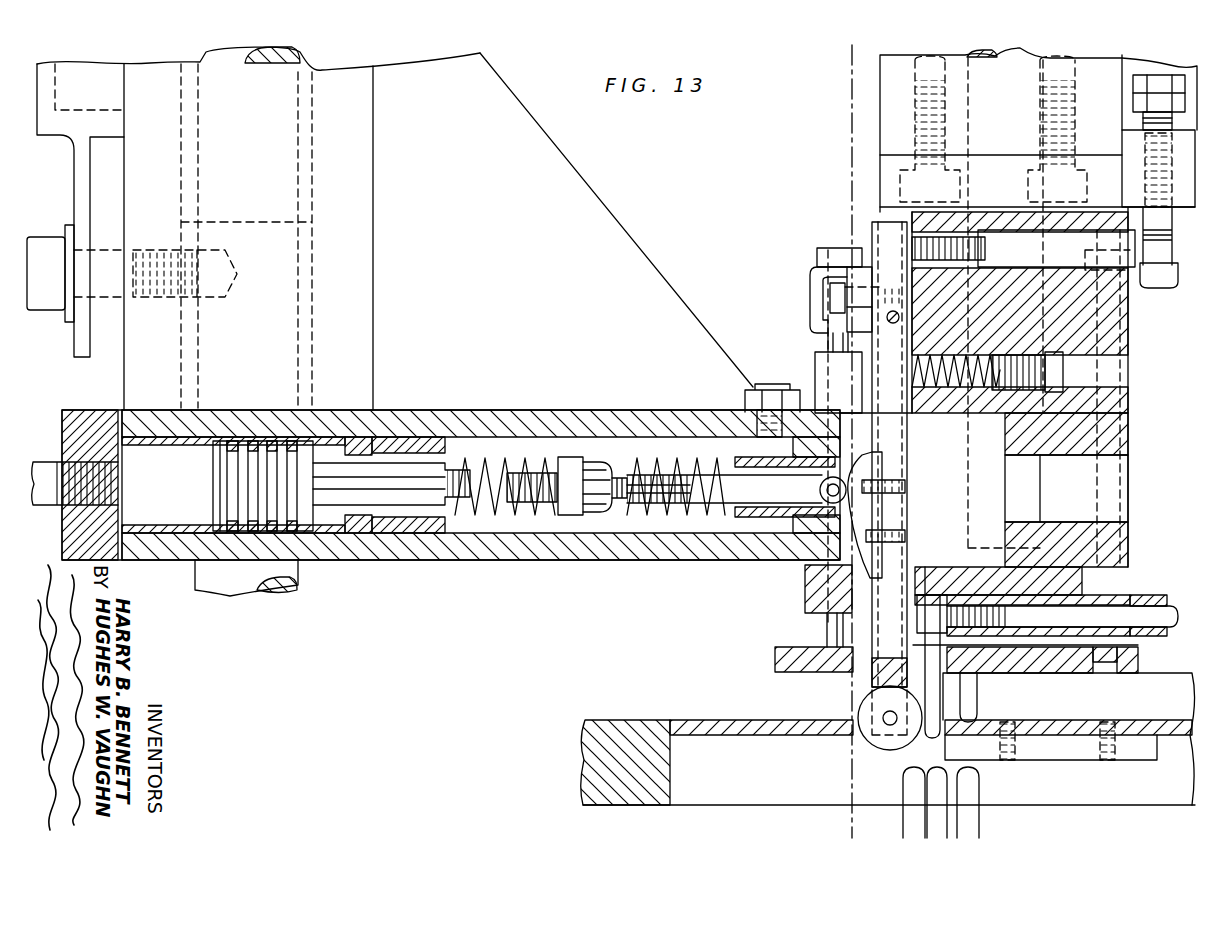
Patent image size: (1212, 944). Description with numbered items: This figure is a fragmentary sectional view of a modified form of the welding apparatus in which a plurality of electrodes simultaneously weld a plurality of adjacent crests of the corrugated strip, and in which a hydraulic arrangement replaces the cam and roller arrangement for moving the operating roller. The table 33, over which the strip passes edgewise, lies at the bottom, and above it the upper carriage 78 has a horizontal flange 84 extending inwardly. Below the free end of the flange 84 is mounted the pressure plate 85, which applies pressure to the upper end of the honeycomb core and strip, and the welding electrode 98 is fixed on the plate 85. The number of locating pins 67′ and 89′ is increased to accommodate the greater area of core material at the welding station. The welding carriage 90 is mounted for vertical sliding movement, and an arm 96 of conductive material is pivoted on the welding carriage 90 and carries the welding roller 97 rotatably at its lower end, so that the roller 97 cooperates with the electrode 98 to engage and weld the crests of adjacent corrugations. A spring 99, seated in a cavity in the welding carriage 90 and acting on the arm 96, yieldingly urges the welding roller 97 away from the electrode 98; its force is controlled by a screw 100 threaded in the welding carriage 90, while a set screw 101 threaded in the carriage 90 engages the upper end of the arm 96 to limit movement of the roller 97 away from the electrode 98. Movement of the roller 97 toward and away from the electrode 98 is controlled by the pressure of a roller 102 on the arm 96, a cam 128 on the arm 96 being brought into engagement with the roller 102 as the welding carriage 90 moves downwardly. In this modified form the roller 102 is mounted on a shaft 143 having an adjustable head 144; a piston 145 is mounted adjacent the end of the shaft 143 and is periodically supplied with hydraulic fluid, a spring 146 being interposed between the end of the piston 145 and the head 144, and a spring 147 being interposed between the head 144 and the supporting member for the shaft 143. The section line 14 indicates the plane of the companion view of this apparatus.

The upper carriage 78 is at (358, 286).
The horizontal flange 84 is at (500, 423).
The piston 145 is at (232, 486).
The spring 146 is at (493, 500).
The adjustable head 144 is at (575, 507).
The spring 147 is at (673, 507).
The shaft 143 is at (747, 500).
The roller 102 is at (850, 483).
The section line 14- 14 is at (846, 65).
The arm 96 is at (897, 465).
The cam 128 is at (870, 512).
The welding carriage 90 is at (1126, 328).
The set screw 101 is at (985, 247).
The screw 100 is at (1058, 370).
The spring 99 is at (957, 388).
The pressure plate 85 is at (775, 660).
The welding roller 97 is at (865, 712).
The welding electrode 98 is at (915, 745).
The locating pins 89' is at (1005, 697).
The table 33 is at (888, 762).
The locating pins 67' is at (918, 804).